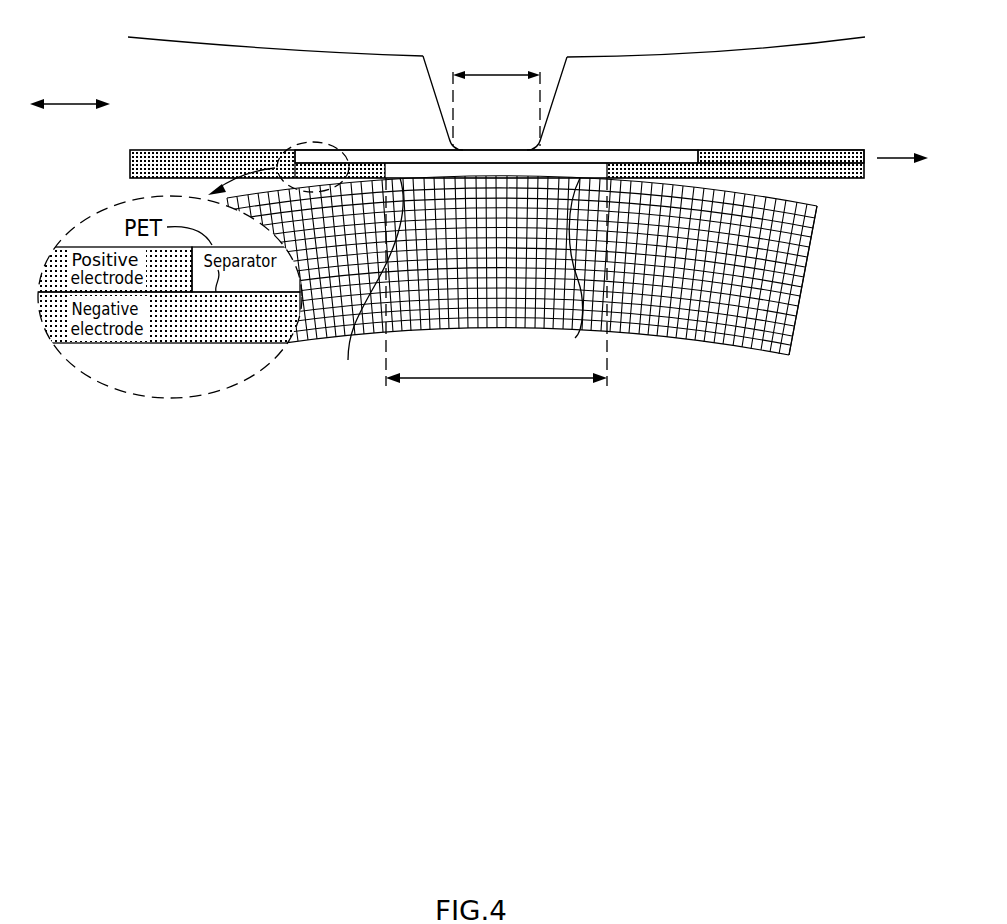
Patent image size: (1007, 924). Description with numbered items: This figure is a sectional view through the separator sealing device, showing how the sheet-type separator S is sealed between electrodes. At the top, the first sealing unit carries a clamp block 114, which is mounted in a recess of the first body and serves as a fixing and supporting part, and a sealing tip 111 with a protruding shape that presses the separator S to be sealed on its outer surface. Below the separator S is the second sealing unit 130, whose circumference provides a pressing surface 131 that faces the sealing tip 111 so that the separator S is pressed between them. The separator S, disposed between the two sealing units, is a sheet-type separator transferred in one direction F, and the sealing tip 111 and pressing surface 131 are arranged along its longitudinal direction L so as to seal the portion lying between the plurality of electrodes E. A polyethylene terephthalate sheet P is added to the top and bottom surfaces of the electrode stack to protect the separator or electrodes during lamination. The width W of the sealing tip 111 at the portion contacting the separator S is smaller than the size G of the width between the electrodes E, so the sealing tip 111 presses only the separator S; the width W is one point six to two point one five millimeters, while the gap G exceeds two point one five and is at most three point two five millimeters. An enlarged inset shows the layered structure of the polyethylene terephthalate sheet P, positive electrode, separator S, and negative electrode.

The sealing tip 111 is at (560, 92).
The clamp block 114 is at (713, 52).
The second sealing unit 130 is at (806, 327).
The pressing surface 131 is at (793, 195).
The PET sheet P is at (680, 147).
The electrodes E is at (797, 155).
The transfer direction F is at (912, 159).
The width of the sealing tip W is at (496, 97).
The length direction L is at (70, 94).
The size of the width between the electrodes G is at (496, 292).
The separator S is at (462, 284).